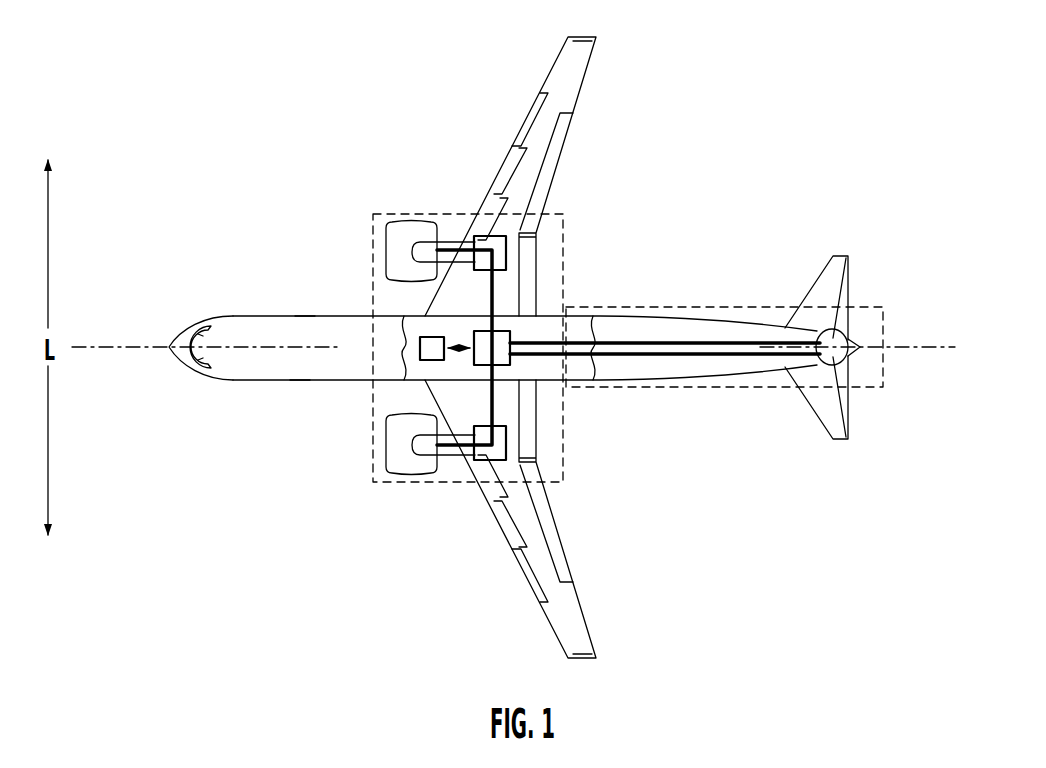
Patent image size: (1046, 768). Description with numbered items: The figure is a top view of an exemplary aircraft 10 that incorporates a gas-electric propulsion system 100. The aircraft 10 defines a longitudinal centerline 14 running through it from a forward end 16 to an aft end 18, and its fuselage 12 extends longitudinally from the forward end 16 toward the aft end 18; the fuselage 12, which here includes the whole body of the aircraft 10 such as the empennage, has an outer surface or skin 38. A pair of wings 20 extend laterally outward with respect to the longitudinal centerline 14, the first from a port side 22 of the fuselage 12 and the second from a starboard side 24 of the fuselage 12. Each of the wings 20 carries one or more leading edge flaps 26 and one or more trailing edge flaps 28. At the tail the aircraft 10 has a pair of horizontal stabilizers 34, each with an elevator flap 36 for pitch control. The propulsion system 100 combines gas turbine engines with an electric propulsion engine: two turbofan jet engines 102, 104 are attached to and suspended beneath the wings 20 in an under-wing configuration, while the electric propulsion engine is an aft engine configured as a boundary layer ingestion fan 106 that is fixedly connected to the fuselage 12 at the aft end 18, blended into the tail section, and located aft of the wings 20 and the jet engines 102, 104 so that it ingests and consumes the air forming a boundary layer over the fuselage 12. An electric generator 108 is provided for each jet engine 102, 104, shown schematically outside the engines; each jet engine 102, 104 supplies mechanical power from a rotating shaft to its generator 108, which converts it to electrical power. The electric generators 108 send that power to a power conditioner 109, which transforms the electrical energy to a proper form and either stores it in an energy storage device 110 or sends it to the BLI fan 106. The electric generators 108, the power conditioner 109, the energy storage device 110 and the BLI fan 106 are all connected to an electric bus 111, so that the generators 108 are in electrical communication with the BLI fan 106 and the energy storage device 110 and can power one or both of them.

The aircraft 10 is at (709, 136).
The fuselage 12 is at (225, 367).
The longitudinal centerline 14 is at (95, 349).
The forward end 16 is at (171, 364).
The aft end 18 is at (806, 434).
The wings 20 is at (577, 61).
The port side 22 is at (299, 397).
The starboard side 24 is at (305, 314).
The leading edge flaps 26 is at (505, 530).
The trailing edge flaps 28 is at (556, 534).
The horizontal stabilizers 34 is at (828, 276).
The elevator flap 36 is at (842, 275).
The outer surface or skin 38 is at (663, 366).
The propulsion system 100 is at (648, 306).
The turbofan jet engine 102 is at (391, 483).
The turbofan jet engine 104 is at (403, 232).
The boundary layer ingestion fan 106 is at (851, 317).
The electric generators 108 is at (507, 255).
The power conditioner 109 is at (510, 337).
The energy storage device 110 is at (424, 362).
The electric bus 111 is at (549, 367).